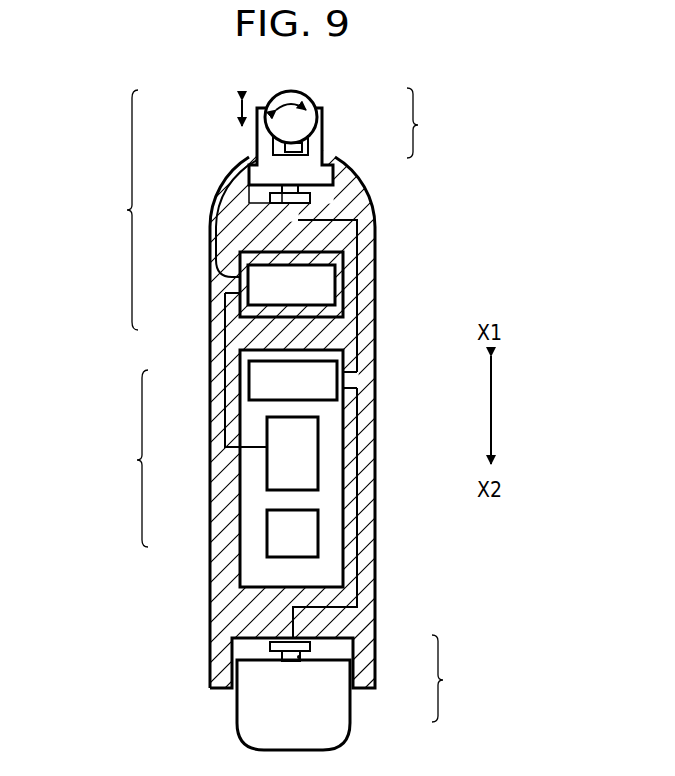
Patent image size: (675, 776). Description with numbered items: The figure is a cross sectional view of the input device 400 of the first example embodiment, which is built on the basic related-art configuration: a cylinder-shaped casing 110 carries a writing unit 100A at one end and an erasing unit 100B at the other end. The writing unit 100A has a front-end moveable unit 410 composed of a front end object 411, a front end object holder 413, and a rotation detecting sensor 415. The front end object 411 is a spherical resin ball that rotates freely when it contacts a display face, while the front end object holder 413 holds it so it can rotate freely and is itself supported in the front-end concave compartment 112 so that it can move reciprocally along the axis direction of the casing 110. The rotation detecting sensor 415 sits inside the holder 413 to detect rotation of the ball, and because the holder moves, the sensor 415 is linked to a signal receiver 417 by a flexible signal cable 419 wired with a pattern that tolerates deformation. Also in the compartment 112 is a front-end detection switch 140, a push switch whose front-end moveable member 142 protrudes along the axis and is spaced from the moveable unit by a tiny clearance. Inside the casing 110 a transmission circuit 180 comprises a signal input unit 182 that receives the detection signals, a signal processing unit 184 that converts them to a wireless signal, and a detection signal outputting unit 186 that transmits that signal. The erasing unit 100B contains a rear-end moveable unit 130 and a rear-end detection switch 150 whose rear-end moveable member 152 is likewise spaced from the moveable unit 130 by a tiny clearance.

The input device 400 is at (466, 92).
The front-end moveable unit 410 is at (350, 136).
The front end object 411 is at (318, 98).
The front end object holder 413 is at (325, 128).
The rotation detecting sensor 415 is at (298, 148).
The signal cable 419 is at (217, 235).
The front-end concave compartment 112 is at (258, 197).
The front-end moveable member 142 is at (297, 189).
The front-end detection switch 140 is at (304, 198).
The writing unit 100A is at (105, 210).
The signal receiver 417 is at (325, 292).
The casing 110 is at (375, 395).
The transmission circuit 180 is at (219, 468).
The signal input unit 182 is at (275, 383).
The signal processing unit 184 is at (275, 467).
The detection signal outputting unit 186 is at (275, 530).
The rear-end detection switch 150 is at (305, 645).
The rear-end moveable member 152 is at (302, 657).
The rear-end moveable unit 130 is at (338, 708).
The erasing unit 100B is at (367, 692).